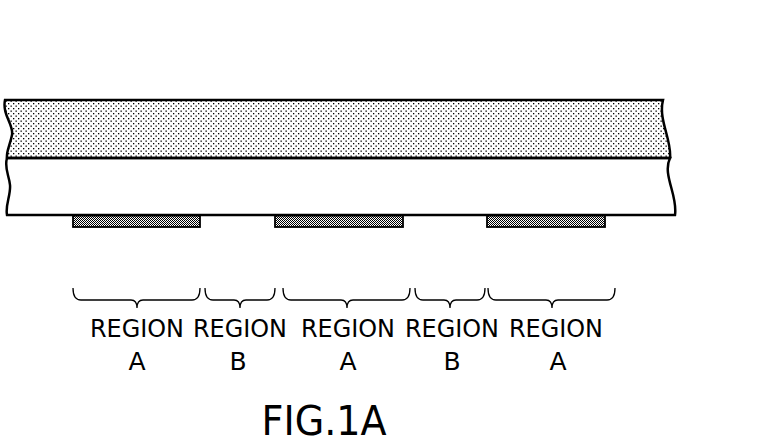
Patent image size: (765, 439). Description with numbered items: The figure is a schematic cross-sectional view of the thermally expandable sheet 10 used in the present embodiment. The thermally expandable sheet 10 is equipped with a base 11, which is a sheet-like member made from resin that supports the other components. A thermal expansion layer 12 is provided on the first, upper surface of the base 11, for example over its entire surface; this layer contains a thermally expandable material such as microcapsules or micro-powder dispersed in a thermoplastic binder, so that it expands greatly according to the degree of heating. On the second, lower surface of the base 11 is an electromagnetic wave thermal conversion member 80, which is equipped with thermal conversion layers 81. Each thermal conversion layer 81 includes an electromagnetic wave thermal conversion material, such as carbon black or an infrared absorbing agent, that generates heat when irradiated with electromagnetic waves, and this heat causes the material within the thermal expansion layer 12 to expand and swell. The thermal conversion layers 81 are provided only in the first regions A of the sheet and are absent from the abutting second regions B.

The thermally expandable sheet 10 is at (373, 114).
The base 11 is at (645, 190).
The thermal expansion layer 12 is at (635, 128).
The electromagnetic wave thermal conversion member 80 is at (387, 267).
The electromagnetic wave thermal conversion layer 81 is at (140, 227).